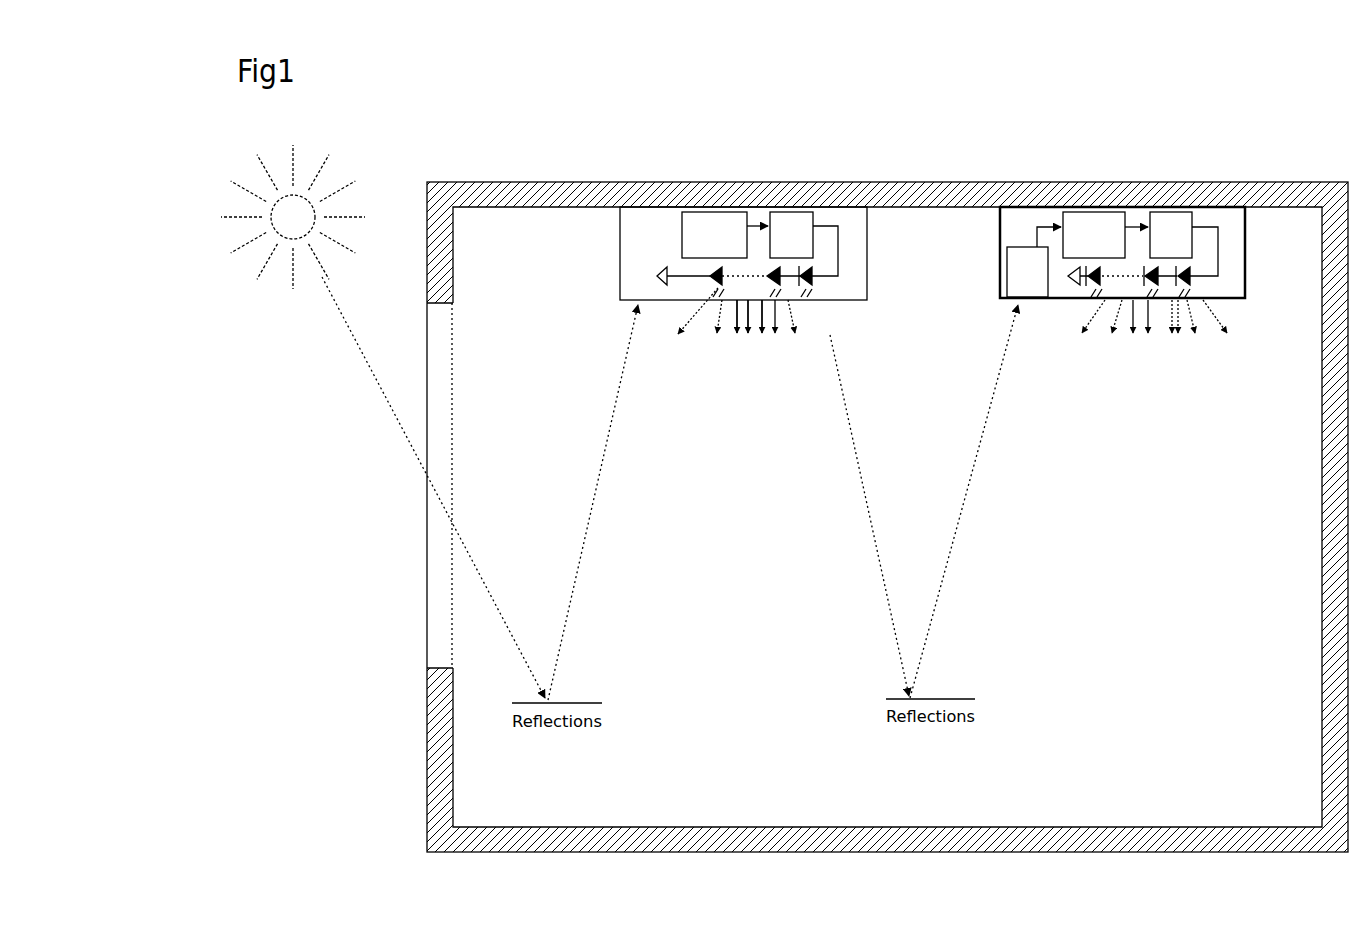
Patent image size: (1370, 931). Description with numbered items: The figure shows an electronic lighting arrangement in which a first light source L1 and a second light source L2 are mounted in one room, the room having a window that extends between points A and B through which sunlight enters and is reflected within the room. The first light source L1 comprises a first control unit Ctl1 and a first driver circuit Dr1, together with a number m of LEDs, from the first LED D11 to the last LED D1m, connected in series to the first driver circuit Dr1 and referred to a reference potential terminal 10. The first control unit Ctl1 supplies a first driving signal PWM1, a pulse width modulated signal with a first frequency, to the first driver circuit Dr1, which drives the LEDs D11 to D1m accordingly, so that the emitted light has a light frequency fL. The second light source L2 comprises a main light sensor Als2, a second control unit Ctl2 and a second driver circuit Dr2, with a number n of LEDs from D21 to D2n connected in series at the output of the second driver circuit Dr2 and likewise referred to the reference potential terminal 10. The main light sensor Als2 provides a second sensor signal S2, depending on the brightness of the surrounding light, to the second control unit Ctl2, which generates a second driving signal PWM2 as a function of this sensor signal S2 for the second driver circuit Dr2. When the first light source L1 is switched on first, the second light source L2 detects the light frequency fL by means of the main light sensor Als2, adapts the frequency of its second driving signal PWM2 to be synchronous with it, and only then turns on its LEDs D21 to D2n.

The first light source L1 is at (868, 268).
The second light source L2 is at (1247, 280).
The first control unit Ctl1 is at (682, 242).
The second control unit Ctl2 is at (1087, 213).
The first driving signal PWM1 is at (762, 223).
The second driving signal PWM2 is at (1133, 223).
The first driver circuit Dr1 is at (797, 212).
The second driver circuit Dr2 is at (1178, 212).
The reference potential terminal 10 is at (660, 268).
The LED of the first light source D1m is at (710, 260).
The first LED D11 is at (807, 288).
The LED of the second light source D2n is at (1080, 286).
The LED of the second light source D21 is at (1183, 288).
The light frequency fL is at (808, 290).
The second sensor signal S2 is at (1035, 238).
The main light sensor Als2 is at (1007, 272).
The window point A is at (453, 303).
The window point B is at (453, 670).